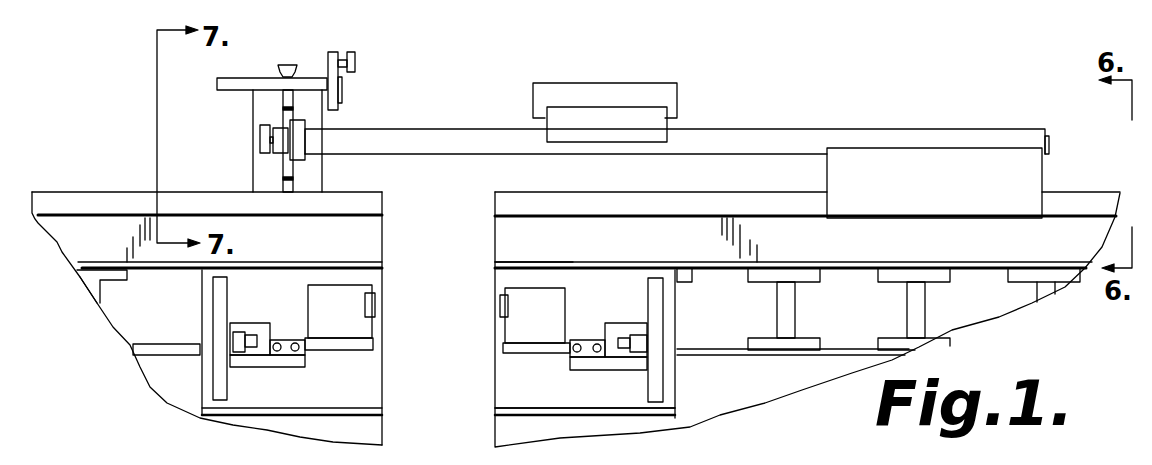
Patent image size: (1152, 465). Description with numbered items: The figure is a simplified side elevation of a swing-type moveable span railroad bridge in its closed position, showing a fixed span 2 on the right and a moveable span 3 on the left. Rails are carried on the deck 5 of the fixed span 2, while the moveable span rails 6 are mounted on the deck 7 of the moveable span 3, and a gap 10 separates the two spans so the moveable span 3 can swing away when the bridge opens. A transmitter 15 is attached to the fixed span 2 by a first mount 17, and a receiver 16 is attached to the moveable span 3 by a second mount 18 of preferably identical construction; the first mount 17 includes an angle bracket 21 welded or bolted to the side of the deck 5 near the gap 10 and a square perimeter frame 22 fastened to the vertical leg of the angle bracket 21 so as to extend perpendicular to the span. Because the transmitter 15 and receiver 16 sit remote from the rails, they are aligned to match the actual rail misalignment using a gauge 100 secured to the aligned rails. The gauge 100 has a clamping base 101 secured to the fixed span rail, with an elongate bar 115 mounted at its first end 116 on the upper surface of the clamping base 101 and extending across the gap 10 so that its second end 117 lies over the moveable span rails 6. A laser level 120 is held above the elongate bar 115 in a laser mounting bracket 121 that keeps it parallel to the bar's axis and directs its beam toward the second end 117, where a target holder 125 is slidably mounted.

The fixed span 2 is at (752, 392).
The moveable span 3 is at (112, 378).
The deck 5 is at (949, 277).
The rails 6 is at (57, 240).
The deck 7 is at (87, 286).
The gap 10 is at (443, 350).
The transmitter 15 is at (540, 323).
The receiver 16 is at (345, 318).
The first mount 17 is at (647, 327).
The second mount 18 is at (230, 324).
The angle bracket 21 is at (500, 280).
The perimeter frame 22 is at (653, 287).
The gauge 100 is at (772, 88).
The clamping base 101 is at (1029, 174).
The elongate bar 115 is at (730, 128).
The first end 116 is at (1049, 134).
The second end 117 is at (330, 140).
The laser level 120 is at (622, 83).
The laser mounting bracket 121 is at (557, 122).
The target holder 125 is at (282, 128).